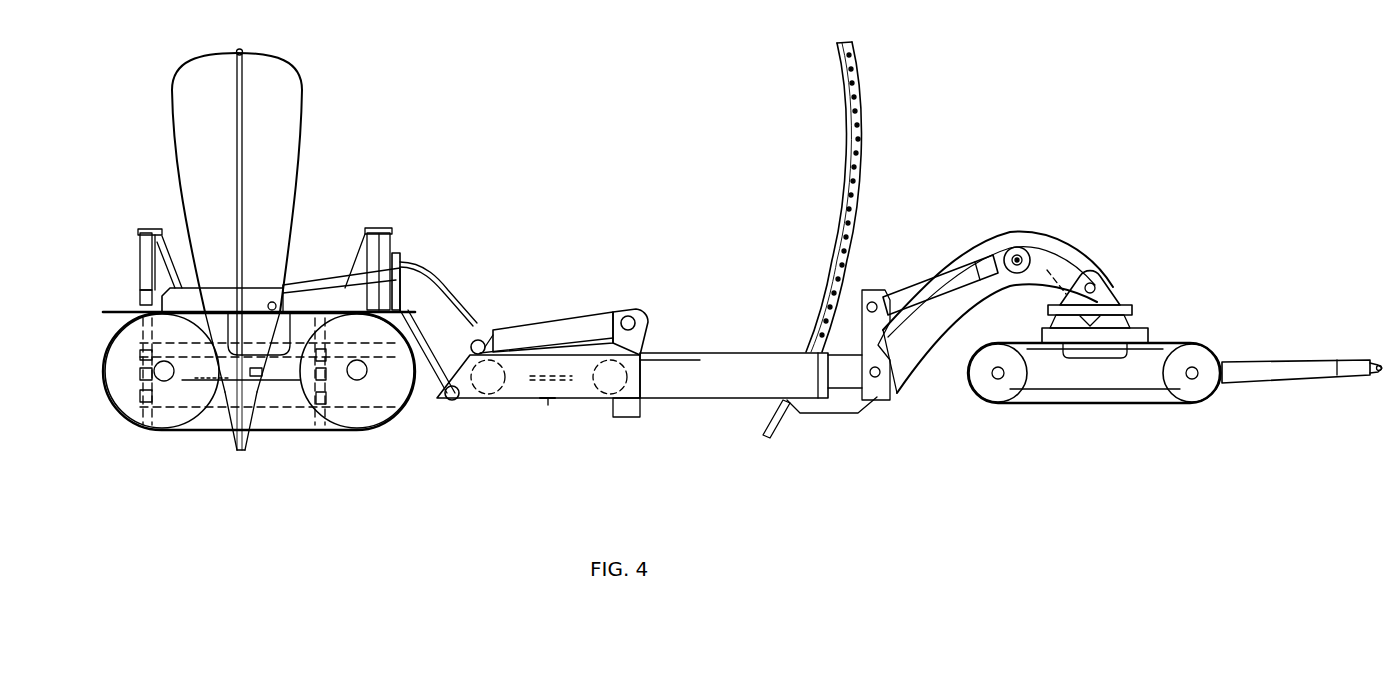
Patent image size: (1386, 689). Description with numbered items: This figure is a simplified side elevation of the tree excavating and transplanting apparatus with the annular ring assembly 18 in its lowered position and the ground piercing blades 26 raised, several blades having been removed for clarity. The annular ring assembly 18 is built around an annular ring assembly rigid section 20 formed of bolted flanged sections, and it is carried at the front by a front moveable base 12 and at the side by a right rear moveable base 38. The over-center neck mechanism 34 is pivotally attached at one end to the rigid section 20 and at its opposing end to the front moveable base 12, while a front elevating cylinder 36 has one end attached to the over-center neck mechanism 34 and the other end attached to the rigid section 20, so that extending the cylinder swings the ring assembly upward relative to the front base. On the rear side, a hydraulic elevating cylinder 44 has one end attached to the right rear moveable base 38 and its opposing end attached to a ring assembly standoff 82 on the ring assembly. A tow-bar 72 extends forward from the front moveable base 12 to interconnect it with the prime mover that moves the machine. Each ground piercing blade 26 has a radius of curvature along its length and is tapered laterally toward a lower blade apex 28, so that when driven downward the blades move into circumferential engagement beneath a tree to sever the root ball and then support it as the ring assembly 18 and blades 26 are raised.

The front moveable base 12 is at (1094, 375).
The annular ring assembly 18 is at (755, 326).
The annular ring assembly rigid section 20 is at (678, 402).
The ground piercing blade 26 is at (903, 82).
The lower blade apex 28 is at (243, 447).
The over-center neck mechanism 34 is at (1014, 284).
The front elevating cylinder 36 is at (932, 281).
The right rear moveable base 38 is at (236, 360).
The hydraulic elevating cylinder 44 is at (543, 320).
The tow-bar 72 is at (1255, 362).
The ring assembly standoff 82 is at (619, 302).